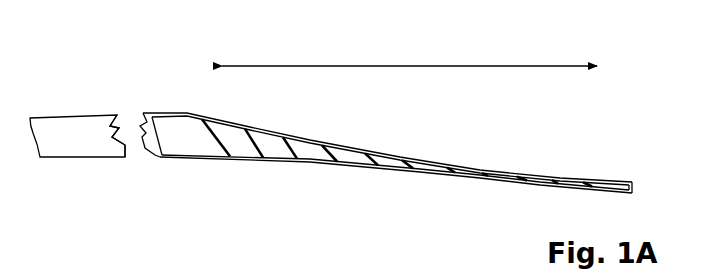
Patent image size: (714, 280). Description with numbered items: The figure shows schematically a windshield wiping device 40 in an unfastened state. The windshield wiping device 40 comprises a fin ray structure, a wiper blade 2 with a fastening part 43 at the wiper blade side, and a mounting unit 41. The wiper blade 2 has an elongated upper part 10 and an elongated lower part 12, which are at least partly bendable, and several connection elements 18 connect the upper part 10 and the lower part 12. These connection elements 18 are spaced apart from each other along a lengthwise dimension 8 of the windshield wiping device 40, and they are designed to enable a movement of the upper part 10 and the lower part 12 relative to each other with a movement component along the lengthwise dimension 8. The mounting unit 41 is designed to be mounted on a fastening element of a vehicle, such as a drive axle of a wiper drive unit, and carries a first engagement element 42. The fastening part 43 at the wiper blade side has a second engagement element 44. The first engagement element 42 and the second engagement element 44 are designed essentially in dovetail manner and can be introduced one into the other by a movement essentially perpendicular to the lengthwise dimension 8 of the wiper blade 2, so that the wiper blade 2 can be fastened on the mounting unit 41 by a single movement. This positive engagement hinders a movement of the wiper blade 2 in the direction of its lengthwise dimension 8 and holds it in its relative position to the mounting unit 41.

The wiper blade 2 is at (387, 148).
The lengthwise dimension 8 is at (408, 65).
The elongated upper part 10 is at (428, 160).
The elongated lower part 12 is at (425, 178).
The connection elements 18 is at (377, 155).
The windshield wiping device 40 is at (74, 51).
The mounting unit 41 is at (67, 140).
The first engagement element 42 is at (113, 138).
The fastening part 43 is at (136, 110).
The second engagement element 44 is at (144, 138).